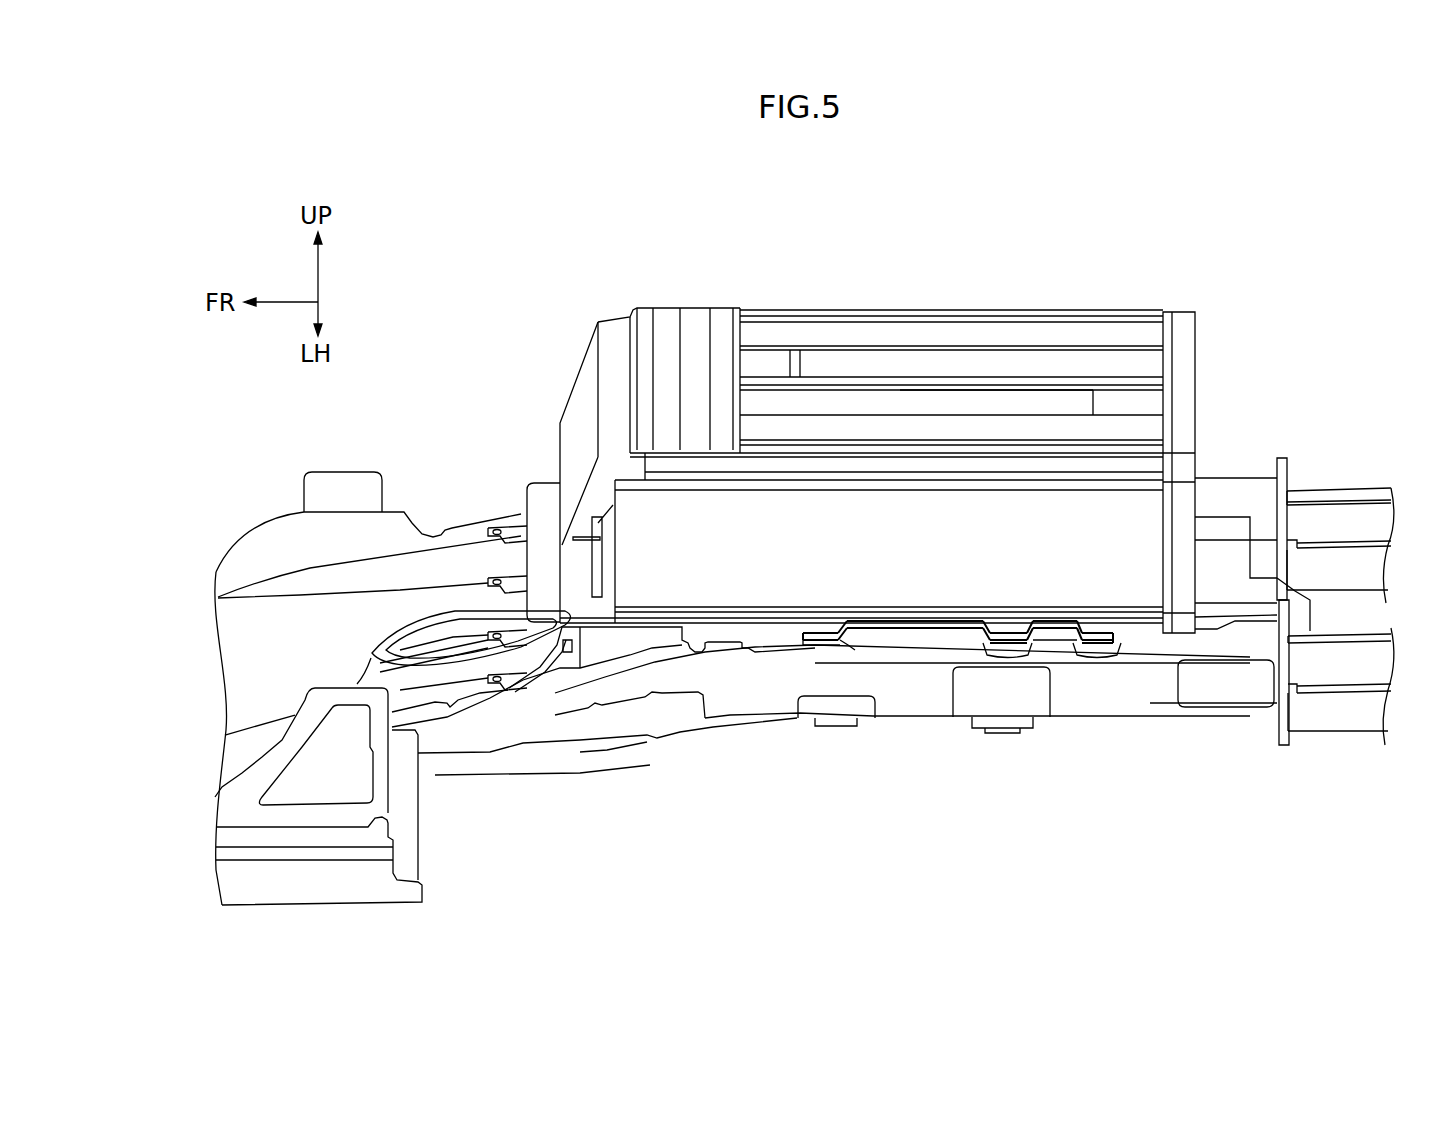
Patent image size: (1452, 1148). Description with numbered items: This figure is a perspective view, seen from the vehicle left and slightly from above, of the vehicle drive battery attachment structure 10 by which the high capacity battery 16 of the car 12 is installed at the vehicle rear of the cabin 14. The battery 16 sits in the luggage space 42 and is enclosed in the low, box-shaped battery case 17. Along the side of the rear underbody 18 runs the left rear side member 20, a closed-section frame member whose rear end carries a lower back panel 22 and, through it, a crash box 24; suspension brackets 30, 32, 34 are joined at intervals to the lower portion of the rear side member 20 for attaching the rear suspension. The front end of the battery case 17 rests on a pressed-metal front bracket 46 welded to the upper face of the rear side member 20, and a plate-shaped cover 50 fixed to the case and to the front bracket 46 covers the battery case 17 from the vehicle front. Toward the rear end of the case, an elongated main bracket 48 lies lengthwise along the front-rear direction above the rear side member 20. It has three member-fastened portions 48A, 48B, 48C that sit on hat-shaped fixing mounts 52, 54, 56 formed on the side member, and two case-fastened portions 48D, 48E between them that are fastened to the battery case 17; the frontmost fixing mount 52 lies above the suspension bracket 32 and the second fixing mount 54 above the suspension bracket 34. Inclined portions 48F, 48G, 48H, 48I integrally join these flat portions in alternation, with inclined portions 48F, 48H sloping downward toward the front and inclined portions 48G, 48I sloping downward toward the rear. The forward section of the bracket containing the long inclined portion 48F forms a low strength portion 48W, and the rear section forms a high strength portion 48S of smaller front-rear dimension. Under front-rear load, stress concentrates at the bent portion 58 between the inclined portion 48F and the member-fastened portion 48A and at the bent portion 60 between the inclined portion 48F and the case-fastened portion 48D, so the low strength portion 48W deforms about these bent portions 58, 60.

The vehicle drive battery attachment structure 10 is at (1104, 255).
The car 12 is at (1213, 683).
The cabin 14 is at (377, 413).
The battery 16 is at (830, 309).
The battery case 17 is at (1040, 308).
The rear underbody 18 is at (916, 745).
The rear side member 20 is at (730, 708).
The lower back panel 22 is at (1285, 456).
The crash box 24 is at (1340, 490).
The suspension bracket 30 is at (623, 748).
The suspension bracket 32 is at (837, 730).
The suspension bracket 34 is at (997, 732).
The luggage space 42 is at (948, 255).
The front bracket 46 is at (640, 640).
The main bracket 48 is at (941, 646).
The member-fastened portion 48A is at (823, 630).
The member-fastened portion 48B is at (1003, 628).
The member-fastened portion 48C is at (1105, 627).
The case-fastened portion 48D is at (878, 618).
The case-fastened portion 48E is at (1053, 642).
The inclined portion 48F is at (838, 620).
The inclined portion 48G is at (985, 623).
The inclined portion 48H is at (1023, 628).
The inclined portion 48I is at (1082, 625).
The high strength portion 48S is at (1058, 620).
The low strength portion 48W is at (920, 617).
The cover 50 is at (583, 395).
The fixing mount 52 is at (827, 650).
The fixing mount 54 is at (1013, 655).
The fixing mount 56 is at (1098, 656).
The bent portion 58 is at (813, 630).
The bent portion 60 is at (853, 640).